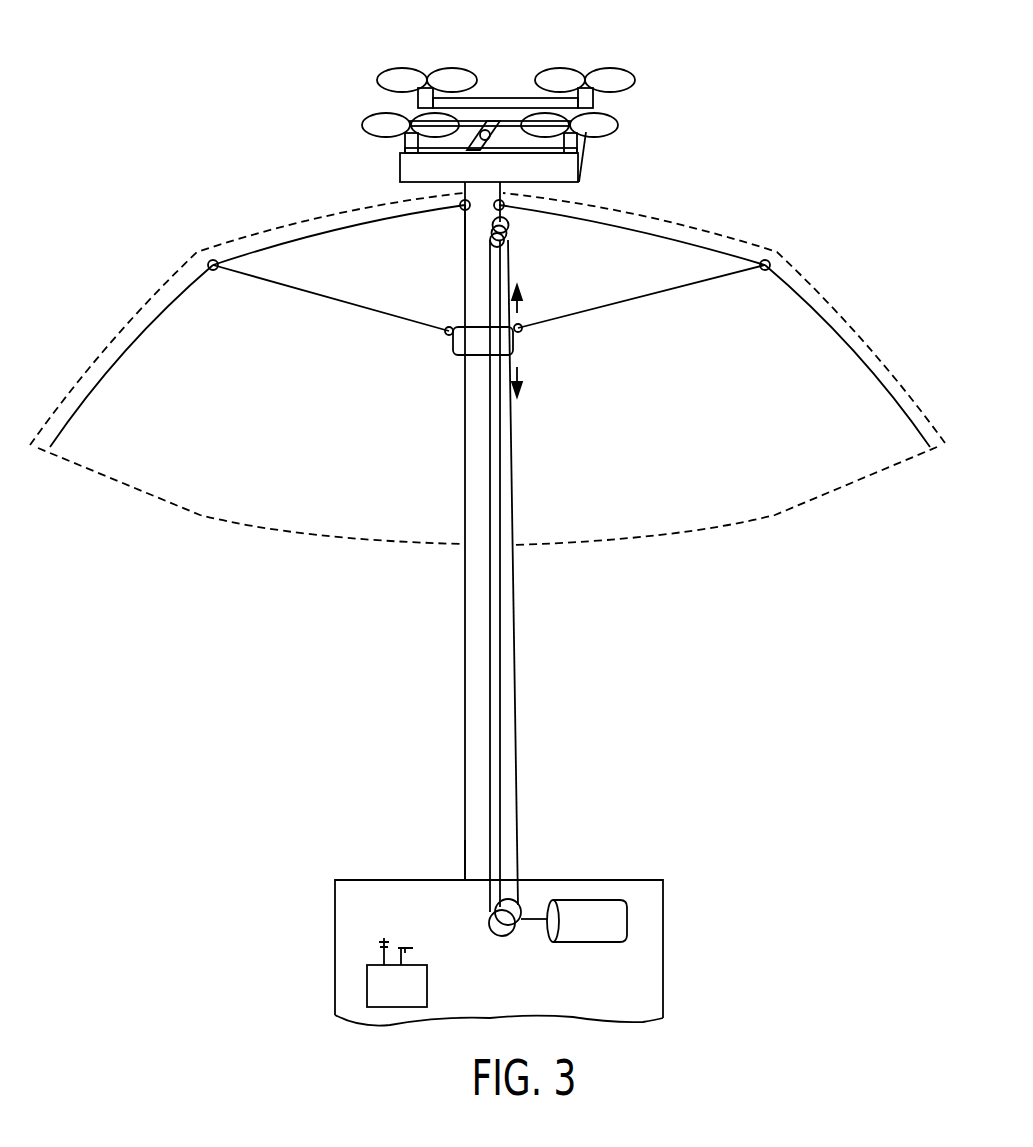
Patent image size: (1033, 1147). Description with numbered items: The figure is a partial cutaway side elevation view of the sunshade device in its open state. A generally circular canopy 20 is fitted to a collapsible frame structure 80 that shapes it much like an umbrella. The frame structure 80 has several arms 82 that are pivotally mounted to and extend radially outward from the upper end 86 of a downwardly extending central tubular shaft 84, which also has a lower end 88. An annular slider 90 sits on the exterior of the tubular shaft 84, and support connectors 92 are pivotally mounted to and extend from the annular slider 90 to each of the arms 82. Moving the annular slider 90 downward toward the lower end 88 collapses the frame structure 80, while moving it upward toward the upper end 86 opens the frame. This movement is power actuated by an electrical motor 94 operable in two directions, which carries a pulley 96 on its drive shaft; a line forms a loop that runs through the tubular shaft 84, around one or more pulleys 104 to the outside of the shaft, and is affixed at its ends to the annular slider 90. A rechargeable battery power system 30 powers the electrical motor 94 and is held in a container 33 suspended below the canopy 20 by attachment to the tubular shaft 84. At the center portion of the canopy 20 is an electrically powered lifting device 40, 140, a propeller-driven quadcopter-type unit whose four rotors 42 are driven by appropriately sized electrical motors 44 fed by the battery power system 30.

The canopy 20 is at (863, 337).
The rechargeable battery power system 30 is at (388, 983).
The container 33 is at (663, 983).
The lifting device 40 is at (615, 78).
The rotor 42 is at (548, 78).
The electrical motor 44 is at (410, 147).
The collapsible frame structure 80 is at (160, 318).
The arm 82 is at (102, 380).
The central tubular shaft 84 is at (465, 683).
The upper end 86 is at (477, 252).
The lower end 88 is at (478, 853).
The annular slider 90 is at (452, 348).
The support connector 92 is at (330, 297).
The electrical motor 94 is at (603, 920).
The pulley 96 is at (503, 923).
The pulley 104 is at (508, 230).
The lifting device 140 is at (402, 78).